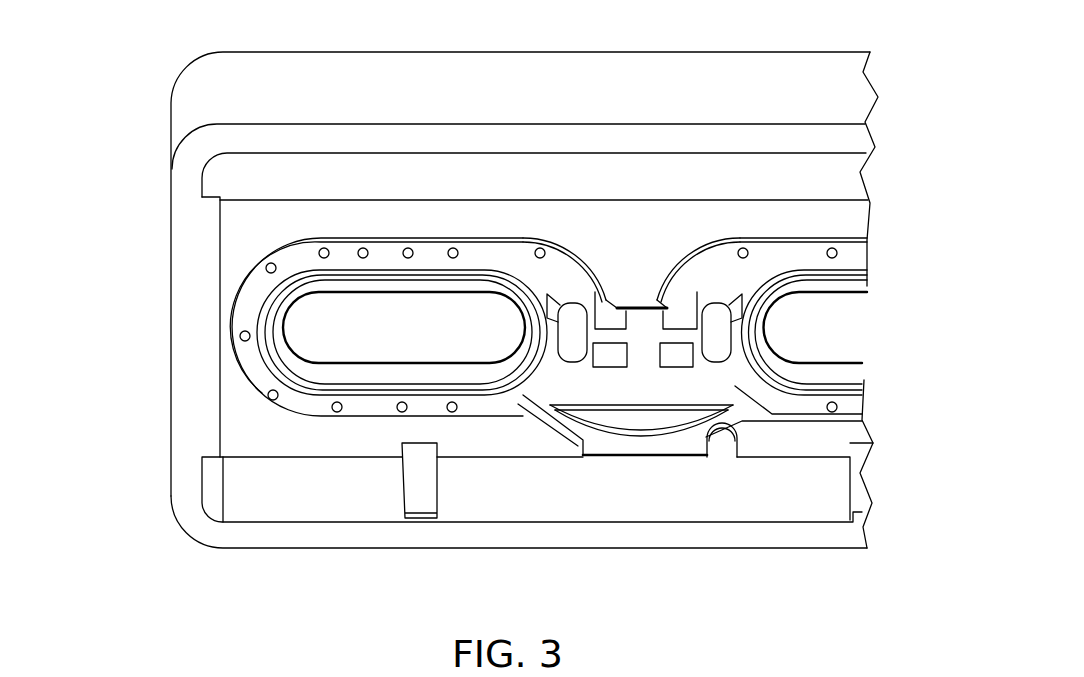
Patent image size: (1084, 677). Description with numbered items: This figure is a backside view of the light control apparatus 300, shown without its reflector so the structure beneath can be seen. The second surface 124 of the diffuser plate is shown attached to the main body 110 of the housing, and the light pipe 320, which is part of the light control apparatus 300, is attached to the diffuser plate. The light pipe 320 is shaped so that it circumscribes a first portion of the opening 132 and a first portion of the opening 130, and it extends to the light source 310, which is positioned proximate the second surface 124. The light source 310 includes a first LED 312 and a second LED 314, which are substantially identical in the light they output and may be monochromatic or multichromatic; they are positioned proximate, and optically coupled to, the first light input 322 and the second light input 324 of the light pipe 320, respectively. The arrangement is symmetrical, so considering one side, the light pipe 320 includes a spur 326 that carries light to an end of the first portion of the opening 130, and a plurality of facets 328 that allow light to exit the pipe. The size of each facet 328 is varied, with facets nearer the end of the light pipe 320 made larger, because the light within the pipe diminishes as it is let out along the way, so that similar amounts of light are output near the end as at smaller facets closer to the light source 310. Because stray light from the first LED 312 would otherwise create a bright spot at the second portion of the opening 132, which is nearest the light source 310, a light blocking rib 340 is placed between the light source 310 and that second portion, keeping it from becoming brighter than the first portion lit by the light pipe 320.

The main body 110 is at (183, 295).
The second surface 124 is at (233, 413).
The opening 130 is at (803, 292).
The opening 132 is at (322, 297).
The light control apparatus 300 is at (810, 372).
The light source 310 is at (645, 376).
The first LED 312 is at (608, 358).
The second LED 314 is at (677, 358).
The light pipe 320 is at (362, 412).
The first light input 322 is at (610, 322).
The second light input 324 is at (677, 322).
The spur 326 is at (483, 458).
The facets 328 is at (363, 248).
The light blocking rib 340 is at (570, 340).